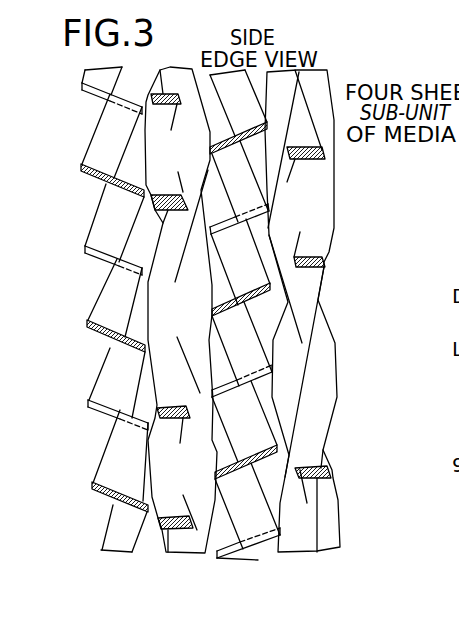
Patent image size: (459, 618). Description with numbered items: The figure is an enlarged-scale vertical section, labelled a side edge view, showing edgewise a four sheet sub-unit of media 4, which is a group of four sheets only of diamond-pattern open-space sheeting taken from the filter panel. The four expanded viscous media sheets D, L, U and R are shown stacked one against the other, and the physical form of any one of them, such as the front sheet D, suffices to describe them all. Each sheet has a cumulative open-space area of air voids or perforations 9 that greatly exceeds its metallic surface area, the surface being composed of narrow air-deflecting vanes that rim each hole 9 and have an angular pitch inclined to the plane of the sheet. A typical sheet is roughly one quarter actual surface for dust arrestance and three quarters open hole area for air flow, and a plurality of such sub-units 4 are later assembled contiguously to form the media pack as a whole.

The four sheet sub-unit of media 4 is at (458, 170).
The air voids or perforations 9 is at (125, 381).
The front sheet D is at (125, 525).
The media sheet L is at (168, 530).
The media sheet U is at (235, 525).
The media sheet R is at (335, 520).